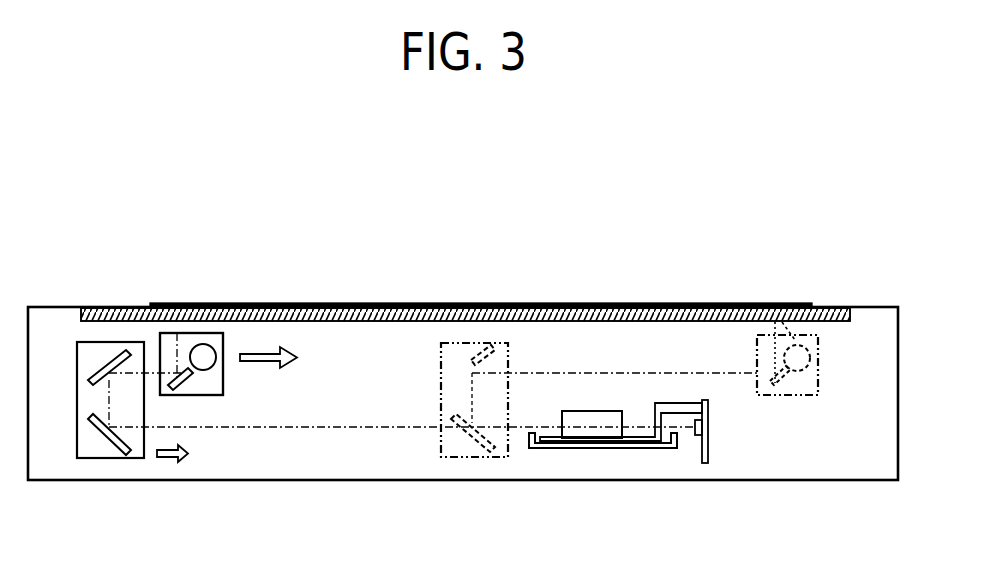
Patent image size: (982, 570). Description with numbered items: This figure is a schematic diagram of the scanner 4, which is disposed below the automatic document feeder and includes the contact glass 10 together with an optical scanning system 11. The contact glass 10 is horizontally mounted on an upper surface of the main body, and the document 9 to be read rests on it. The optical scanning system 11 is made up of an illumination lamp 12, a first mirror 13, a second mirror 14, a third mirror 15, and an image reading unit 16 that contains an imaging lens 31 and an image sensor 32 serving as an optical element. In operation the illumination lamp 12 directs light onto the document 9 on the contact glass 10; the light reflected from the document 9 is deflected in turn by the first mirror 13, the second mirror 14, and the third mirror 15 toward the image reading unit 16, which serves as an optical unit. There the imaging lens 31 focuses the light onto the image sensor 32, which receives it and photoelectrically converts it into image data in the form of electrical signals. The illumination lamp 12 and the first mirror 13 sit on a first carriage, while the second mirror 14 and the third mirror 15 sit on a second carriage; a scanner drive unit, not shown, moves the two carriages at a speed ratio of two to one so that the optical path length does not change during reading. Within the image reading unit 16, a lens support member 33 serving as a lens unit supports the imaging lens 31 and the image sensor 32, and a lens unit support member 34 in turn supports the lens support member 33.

The scanner 4 is at (823, 221).
The document 9 is at (733, 307).
The contact glass 10 is at (132, 307).
The optical scanning system 11 is at (588, 342).
The illumination lamp 12 is at (211, 346).
The first mirror 13 is at (188, 382).
The second mirror 14 is at (103, 364).
The third mirror 15 is at (100, 427).
The image reading unit 16 is at (561, 463).
The imaging lens 31 is at (578, 411).
The image sensor 32 is at (694, 445).
The lens support member 33 is at (633, 437).
The lens unit support member 34 is at (646, 449).